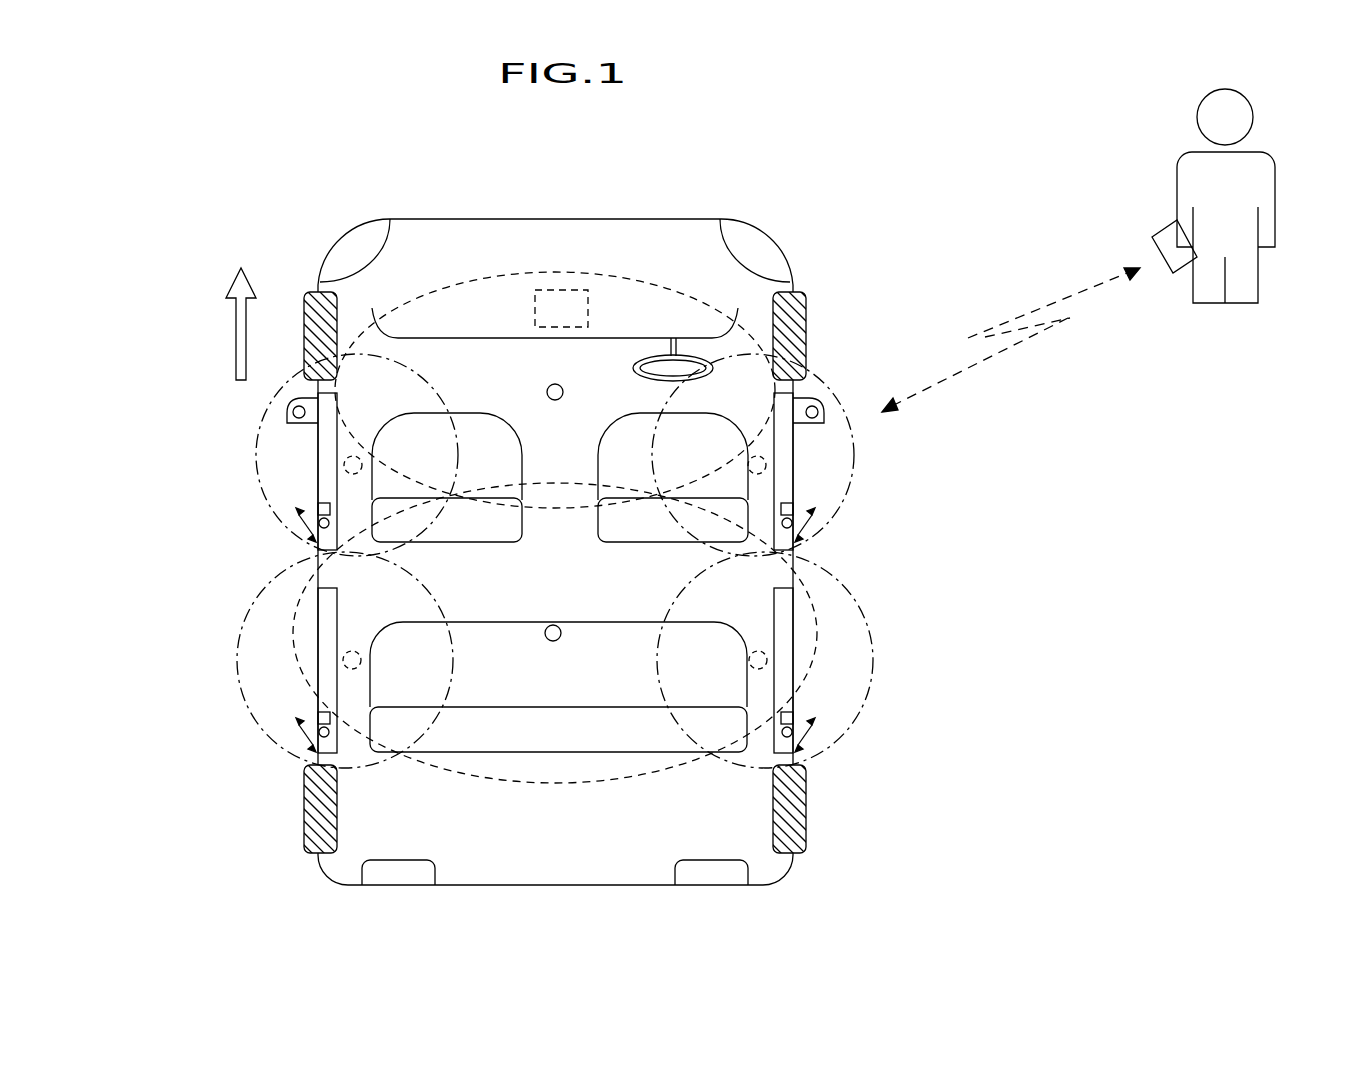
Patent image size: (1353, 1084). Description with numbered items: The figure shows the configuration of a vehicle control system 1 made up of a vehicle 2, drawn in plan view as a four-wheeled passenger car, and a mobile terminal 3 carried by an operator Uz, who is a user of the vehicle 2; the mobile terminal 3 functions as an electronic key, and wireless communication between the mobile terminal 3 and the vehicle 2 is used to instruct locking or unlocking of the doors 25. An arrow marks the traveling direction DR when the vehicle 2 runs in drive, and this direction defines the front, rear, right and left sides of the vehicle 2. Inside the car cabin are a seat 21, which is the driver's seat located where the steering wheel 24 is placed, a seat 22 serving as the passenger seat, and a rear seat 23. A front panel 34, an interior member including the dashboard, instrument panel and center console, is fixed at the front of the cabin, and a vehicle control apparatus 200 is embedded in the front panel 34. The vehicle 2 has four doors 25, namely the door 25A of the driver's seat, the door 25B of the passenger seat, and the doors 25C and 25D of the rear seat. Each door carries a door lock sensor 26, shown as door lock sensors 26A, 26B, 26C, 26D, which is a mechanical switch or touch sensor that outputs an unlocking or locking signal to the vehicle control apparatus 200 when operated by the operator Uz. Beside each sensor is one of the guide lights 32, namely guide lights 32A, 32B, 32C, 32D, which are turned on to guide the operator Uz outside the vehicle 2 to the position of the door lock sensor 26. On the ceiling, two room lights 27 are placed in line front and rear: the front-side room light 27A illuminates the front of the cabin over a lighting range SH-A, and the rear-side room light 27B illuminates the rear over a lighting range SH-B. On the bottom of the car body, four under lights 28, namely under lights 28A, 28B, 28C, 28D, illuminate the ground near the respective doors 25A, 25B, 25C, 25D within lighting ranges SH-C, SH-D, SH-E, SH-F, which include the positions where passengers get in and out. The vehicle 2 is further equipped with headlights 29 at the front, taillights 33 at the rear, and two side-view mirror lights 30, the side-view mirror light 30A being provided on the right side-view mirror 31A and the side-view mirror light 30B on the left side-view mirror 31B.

The vehicle control system 1 is at (782, 116).
The vehicle 2 is at (637, 218).
The mobile terminal 3 is at (1170, 275).
The seat 21 is at (595, 422).
The seat 22 is at (515, 422).
The rear seat 23 is at (483, 620).
The steering wheel 24 is at (638, 365).
The doors 25 is at (554, 573).
The door 25A is at (786, 465).
The door 25B is at (325, 465).
The door 25C is at (786, 620).
The door 25D is at (325, 620).
The door lock sensor 26 is at (555, 620).
The door lock sensor 26A is at (792, 512).
The door lock sensor 26B is at (320, 512).
The door lock sensor 26C is at (792, 722).
The door lock sensor 26D is at (320, 722).
The room lights 27 is at (517, 492).
The front-side room light 27A is at (552, 384).
The rear-side room light 27B is at (545, 633).
The under lights 28 is at (553, 524).
The under light 28A is at (757, 455).
The under light 28B is at (353, 455).
The under light 28C is at (758, 651).
The under light 28D is at (352, 651).
The headlights 29 is at (362, 242).
The side-view mirror lights 30 is at (554, 419).
The side-view mirror light 30A is at (828, 428).
The side-view mirror light 30B is at (290, 428).
The right side-view mirror 31A is at (798, 377).
The left side-view mirror 31B is at (312, 377).
The guide lights 32 is at (555, 652).
The guide light 32A is at (812, 533).
The guide light 32B is at (300, 533).
The guide light 32C is at (812, 742).
The guide light 32D is at (300, 742).
The taillights 33 is at (402, 868).
The front panel 34 is at (473, 325).
The vehicle control apparatus 200 is at (592, 318).
The lighting range SH-A is at (483, 282).
The lighting range SH-B is at (560, 785).
The lighting range SH-C is at (846, 393).
The lighting range SH-D is at (262, 405).
The lighting range SH-E is at (862, 660).
The lighting range SH-F is at (247, 660).
The traveling direction DR is at (225, 324).
The operator Uz is at (1258, 152).